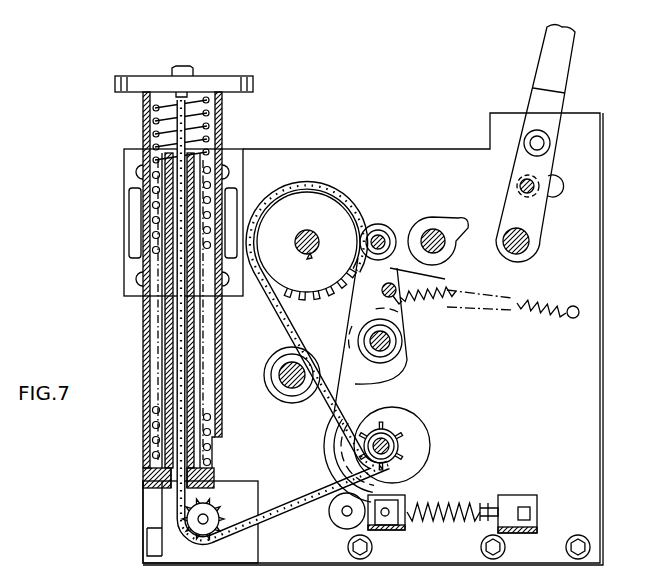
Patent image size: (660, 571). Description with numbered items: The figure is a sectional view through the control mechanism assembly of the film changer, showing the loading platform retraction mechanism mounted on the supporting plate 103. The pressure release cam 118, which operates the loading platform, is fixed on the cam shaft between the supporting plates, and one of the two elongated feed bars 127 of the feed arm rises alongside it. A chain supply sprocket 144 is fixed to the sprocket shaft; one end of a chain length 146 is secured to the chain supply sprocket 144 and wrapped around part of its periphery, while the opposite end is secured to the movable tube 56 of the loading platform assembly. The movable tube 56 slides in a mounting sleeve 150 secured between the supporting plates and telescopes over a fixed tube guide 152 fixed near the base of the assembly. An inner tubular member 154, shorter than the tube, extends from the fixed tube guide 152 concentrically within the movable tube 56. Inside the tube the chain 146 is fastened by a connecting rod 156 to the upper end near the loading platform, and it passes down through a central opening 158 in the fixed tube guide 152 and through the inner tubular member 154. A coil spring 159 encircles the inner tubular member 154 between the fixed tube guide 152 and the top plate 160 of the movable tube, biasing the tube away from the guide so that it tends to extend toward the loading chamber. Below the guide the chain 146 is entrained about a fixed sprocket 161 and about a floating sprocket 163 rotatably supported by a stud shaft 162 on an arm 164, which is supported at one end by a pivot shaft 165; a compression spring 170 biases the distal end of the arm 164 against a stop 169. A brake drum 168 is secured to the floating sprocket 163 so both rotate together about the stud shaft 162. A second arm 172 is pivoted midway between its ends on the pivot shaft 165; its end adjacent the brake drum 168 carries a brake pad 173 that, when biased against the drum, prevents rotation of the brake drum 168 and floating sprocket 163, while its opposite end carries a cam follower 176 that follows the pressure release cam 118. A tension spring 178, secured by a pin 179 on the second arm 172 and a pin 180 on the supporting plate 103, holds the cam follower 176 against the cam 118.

The movable tube 56 is at (146, 111).
The supporting plate 103 is at (598, 200).
The pressure release cam 118 is at (456, 220).
The feed bar 127 is at (565, 67).
The chain supply sprocket 144 is at (333, 207).
The chain length 146 is at (290, 307).
The mounting sleeve 150 is at (128, 228).
The fixed tube guide 152 is at (212, 478).
The inner tubular member 154 is at (167, 335).
The connecting rod 156 is at (190, 112).
The central opening 158 is at (150, 480).
The coil spring 159 is at (157, 424).
The top plate 160 is at (215, 79).
The lower sprocket 161 is at (216, 506).
The stud shaft 162 is at (396, 446).
The floating sprocket 163 is at (345, 452).
The arm 164 is at (400, 377).
The pivot shaft 165 is at (383, 341).
The brake drum 168 is at (420, 462).
The stop 169 is at (343, 518).
The compression spring 170 is at (450, 519).
The second arm 172 is at (430, 283).
The brake pad 173 is at (322, 429).
The cam follower 176 is at (380, 223).
The tension spring 178 is at (506, 294).
The pin 179 is at (399, 301).
The pin 180 is at (558, 328).